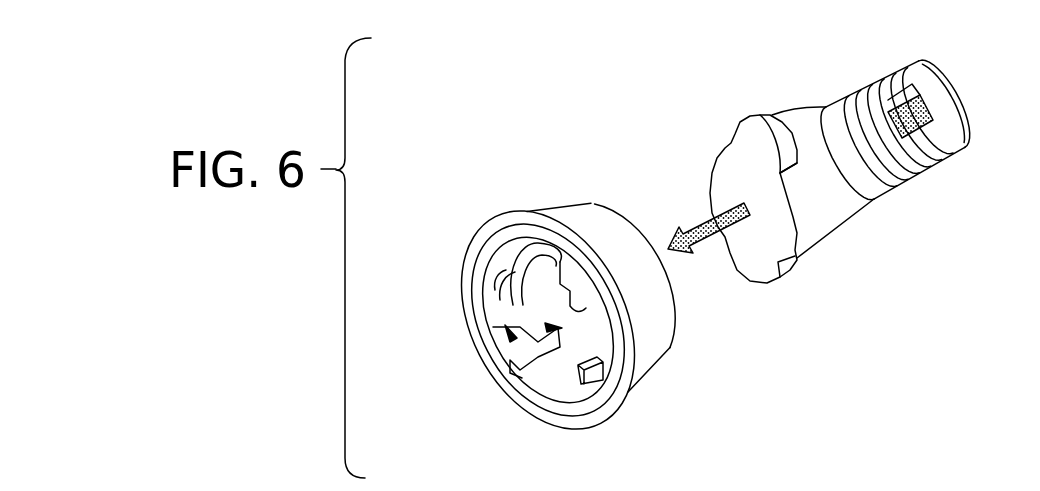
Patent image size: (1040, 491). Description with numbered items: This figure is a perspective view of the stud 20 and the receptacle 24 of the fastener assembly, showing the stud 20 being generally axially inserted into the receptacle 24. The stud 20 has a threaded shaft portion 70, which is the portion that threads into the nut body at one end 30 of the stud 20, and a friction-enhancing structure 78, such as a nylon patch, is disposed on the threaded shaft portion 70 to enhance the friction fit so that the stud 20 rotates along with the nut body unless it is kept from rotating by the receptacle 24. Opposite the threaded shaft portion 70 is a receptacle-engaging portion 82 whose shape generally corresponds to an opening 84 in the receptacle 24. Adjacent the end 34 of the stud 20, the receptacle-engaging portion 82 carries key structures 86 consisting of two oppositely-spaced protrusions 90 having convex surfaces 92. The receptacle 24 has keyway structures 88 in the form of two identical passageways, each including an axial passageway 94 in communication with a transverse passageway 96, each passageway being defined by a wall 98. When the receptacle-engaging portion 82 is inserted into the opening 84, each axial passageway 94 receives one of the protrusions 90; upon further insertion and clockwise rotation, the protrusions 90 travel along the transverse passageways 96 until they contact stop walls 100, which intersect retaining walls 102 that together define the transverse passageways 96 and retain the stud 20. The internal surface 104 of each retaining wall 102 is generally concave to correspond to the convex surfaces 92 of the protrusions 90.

The stud 20 is at (836, 194).
The receptacle 24 is at (546, 305).
The end of the stud 30 is at (968, 112).
The end of the stud 34 is at (717, 178).
The threaded shaft portion 70 is at (898, 117).
The friction-enhancing structure 78 is at (912, 84).
The receptacle-engaging portion 82 is at (843, 231).
The opening 84 is at (487, 313).
The key structures 86 is at (762, 205).
The keyway structures 88 is at (552, 372).
The protrusions 90 is at (761, 118).
The convex surfaces 92 is at (783, 140).
The axial passageway 94 is at (518, 258).
The transverse passageway 96 is at (482, 312).
The wall 98 is at (567, 330).
The stop walls 100 is at (568, 300).
The retaining walls 102 is at (520, 264).
The internal surface 104 is at (514, 262).